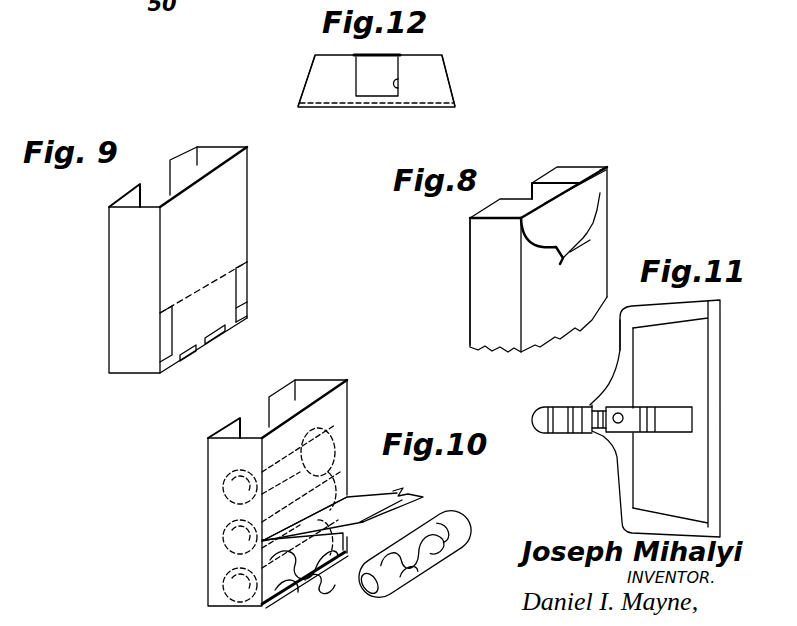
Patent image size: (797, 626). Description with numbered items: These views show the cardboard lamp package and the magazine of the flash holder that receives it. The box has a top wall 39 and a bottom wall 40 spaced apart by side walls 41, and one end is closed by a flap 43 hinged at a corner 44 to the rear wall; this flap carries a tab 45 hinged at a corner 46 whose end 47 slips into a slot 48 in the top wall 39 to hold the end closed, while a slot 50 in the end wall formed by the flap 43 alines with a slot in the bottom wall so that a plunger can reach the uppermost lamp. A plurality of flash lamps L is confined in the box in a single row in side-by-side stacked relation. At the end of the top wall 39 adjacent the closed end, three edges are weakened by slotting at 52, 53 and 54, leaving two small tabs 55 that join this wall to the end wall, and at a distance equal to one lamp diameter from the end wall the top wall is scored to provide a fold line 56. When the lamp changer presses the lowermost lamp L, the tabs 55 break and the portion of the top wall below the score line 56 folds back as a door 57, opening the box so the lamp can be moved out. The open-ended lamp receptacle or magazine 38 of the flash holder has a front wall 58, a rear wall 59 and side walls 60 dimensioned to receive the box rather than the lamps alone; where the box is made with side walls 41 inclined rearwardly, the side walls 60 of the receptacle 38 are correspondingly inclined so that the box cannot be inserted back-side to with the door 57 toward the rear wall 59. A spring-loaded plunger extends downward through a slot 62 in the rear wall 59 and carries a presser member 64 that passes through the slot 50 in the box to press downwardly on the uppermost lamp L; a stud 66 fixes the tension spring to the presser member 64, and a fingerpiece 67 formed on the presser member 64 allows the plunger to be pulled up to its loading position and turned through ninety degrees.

In FIG. 11, the lamp receptacle or magazine 38 is at (634, 330).
In FIG. 12, the top wall 39 is at (430, 107).
In FIG. 9, the top wall 39 is at (243, 180).
In FIG. 10, the top wall 39 is at (347, 405).
In FIG. 8, the top wall 39 is at (595, 257).
In FIG. 12, the bottom wall 40 is at (416, 56).
In FIG. 9, the bottom wall 40 is at (178, 166).
In FIG. 10, the bottom wall 40 is at (280, 400).
In FIG. 12, the side walls 41 is at (313, 72).
In FIG. 9, the side walls 41 is at (213, 155).
In FIG. 10, the side walls 41 is at (330, 392).
In FIG. 8, the side walls 41 is at (492, 240).
In FIG. 8, the flap 43 is at (605, 166).
In FIG. 8, the corner 44 is at (545, 168).
In FIG. 8, the tab 45 is at (600, 193).
In FIG. 8, the corner 46 is at (606, 172).
In FIG. 8, the end 47 is at (560, 258).
In FIG. 8, the slot 48 is at (590, 240).
In FIG. 12, the slot 50 is at (398, 85).
In FIG. 8, the slot 50 is at (530, 185).
In FIG. 9, the slot 52 is at (165, 360).
In FIG. 9, the slot 53 is at (242, 306).
In FIG. 9, the slot 54 is at (213, 340).
In FIG. 9, the tabs 55 is at (183, 361).
In FIG. 10, the tabs 55 is at (405, 497).
In FIG. 9, the fold line 56 is at (193, 293).
In FIG. 10, the fold line 56 is at (316, 523).
In FIG. 9, the door 57 is at (225, 295).
In FIG. 10, the door 57 is at (355, 500).
In FIG. 11, the front wall 58 is at (716, 460).
In FIG. 11, the rear wall 59 is at (620, 360).
In FIG. 11, the side walls 60 is at (685, 313).
In FIG. 11, the slot 62 is at (592, 407).
In FIG. 11, the presser member 64 is at (677, 400).
In FIG. 11, the stud 66 is at (626, 413).
In FIG. 11, the fingerpiece 67 is at (553, 436).
In FIG. 10, the flash lamps L is at (282, 583).